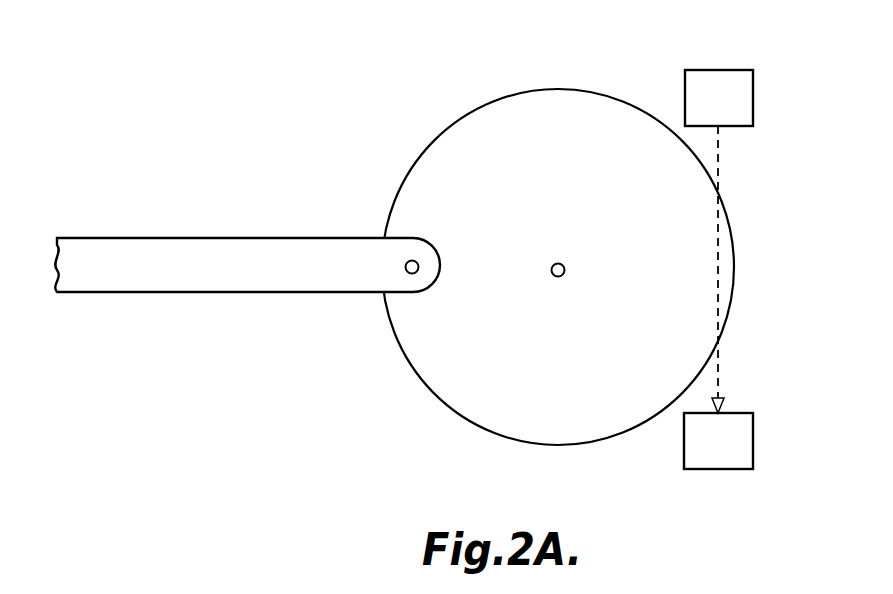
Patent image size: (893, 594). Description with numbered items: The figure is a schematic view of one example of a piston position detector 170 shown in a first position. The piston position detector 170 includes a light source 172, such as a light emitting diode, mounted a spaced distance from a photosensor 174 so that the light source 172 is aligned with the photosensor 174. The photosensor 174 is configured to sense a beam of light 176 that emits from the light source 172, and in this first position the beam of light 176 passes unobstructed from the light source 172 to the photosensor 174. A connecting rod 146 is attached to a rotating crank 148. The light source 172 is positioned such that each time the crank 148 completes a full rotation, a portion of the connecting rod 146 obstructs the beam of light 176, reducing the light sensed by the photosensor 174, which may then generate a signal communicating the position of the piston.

The piston position detector 170 is at (341, 98).
The crank 148 is at (455, 132).
The connecting rod 146 is at (331, 239).
The light source 172 is at (752, 98).
The photosensor 174 is at (751, 447).
The beam of light 176 is at (718, 372).